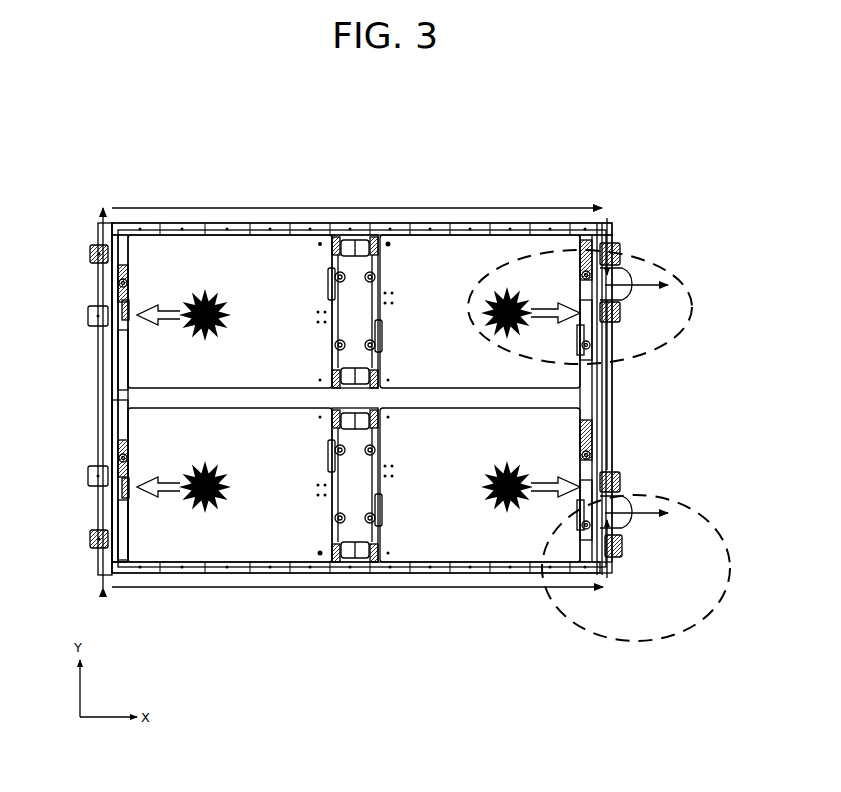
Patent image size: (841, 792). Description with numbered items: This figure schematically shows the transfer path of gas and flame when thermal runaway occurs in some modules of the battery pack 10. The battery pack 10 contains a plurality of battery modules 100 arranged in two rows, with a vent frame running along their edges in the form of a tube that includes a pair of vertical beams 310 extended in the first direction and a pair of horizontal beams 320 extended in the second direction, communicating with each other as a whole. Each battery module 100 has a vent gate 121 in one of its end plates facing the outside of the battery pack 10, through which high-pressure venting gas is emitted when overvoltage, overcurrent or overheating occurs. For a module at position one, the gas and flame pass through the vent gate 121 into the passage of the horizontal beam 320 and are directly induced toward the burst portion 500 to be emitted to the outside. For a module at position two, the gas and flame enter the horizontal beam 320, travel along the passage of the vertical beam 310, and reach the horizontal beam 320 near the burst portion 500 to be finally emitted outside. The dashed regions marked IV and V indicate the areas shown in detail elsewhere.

The battery pack 10 is at (152, 147).
The vertical beam 310 is at (267, 233).
The battery module 100 is at (440, 240).
The horizontal beam 320 is at (100, 340).
The vent gate 121 is at (108, 470).
The burst portion 500 is at (632, 500).
The detail region IV is at (658, 262).
The detail region V is at (696, 510).